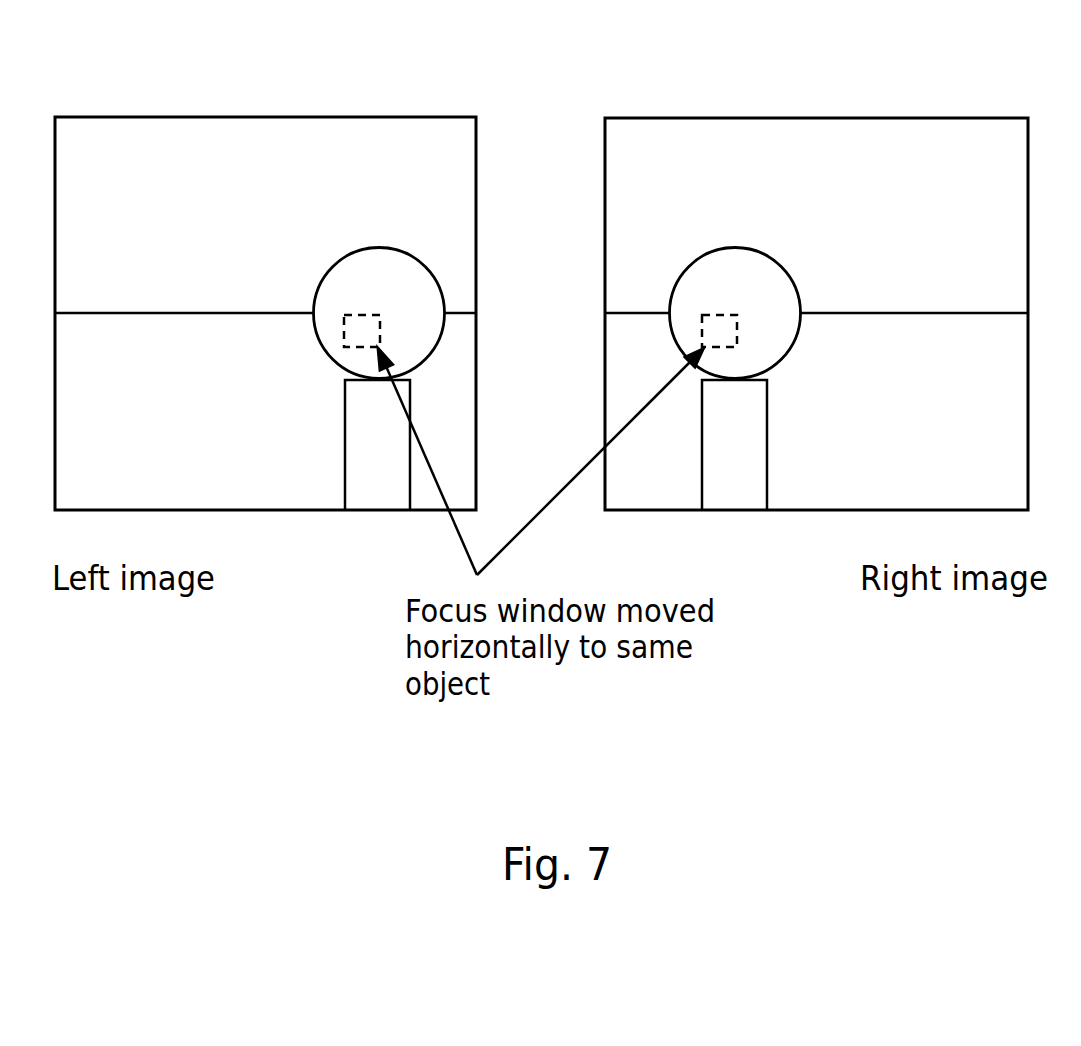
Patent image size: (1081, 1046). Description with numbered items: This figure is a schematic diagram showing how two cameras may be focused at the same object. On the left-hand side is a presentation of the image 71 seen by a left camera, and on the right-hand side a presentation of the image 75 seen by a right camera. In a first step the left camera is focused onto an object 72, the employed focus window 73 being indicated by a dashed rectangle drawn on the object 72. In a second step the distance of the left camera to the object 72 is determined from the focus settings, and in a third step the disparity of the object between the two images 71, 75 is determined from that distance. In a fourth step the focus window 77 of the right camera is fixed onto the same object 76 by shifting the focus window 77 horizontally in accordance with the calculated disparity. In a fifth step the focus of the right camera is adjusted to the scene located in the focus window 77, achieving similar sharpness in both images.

The image 71 is at (130, 123).
The object 72 is at (403, 258).
The focus window 73 is at (358, 318).
The image 75 is at (962, 128).
The object 76 is at (762, 258).
The focus window 77 is at (718, 318).